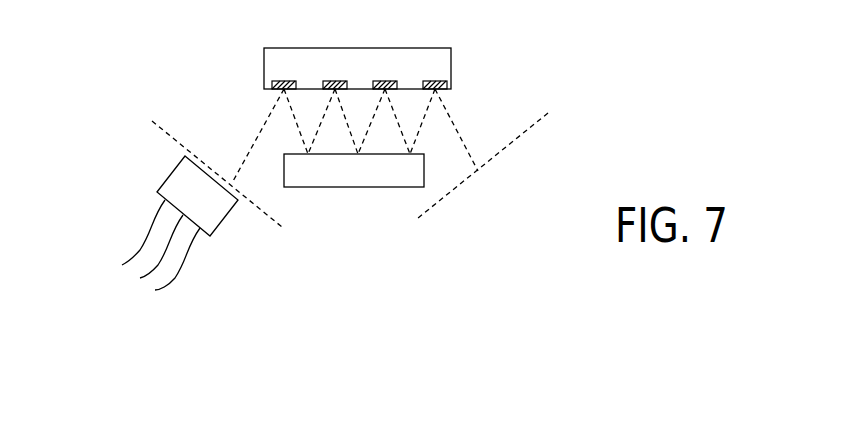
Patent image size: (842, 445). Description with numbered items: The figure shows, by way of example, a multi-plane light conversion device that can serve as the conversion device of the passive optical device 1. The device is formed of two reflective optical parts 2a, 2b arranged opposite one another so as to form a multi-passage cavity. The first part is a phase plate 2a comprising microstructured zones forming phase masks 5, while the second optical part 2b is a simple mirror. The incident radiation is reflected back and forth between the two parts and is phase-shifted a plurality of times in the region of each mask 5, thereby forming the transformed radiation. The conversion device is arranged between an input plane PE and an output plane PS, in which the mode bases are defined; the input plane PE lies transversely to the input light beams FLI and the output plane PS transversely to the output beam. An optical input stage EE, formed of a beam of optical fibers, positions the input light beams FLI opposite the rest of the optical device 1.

The passive optical device 1 is at (326, 288).
The phase plate 2a is at (451, 62).
The second optical part 2b is at (398, 187).
The microstructured phase masks 5 is at (270, 85).
The input plane PE is at (205, 159).
The output plane PS is at (496, 153).
The optical input stage EE is at (170, 173).
The input light beams FLI is at (155, 288).